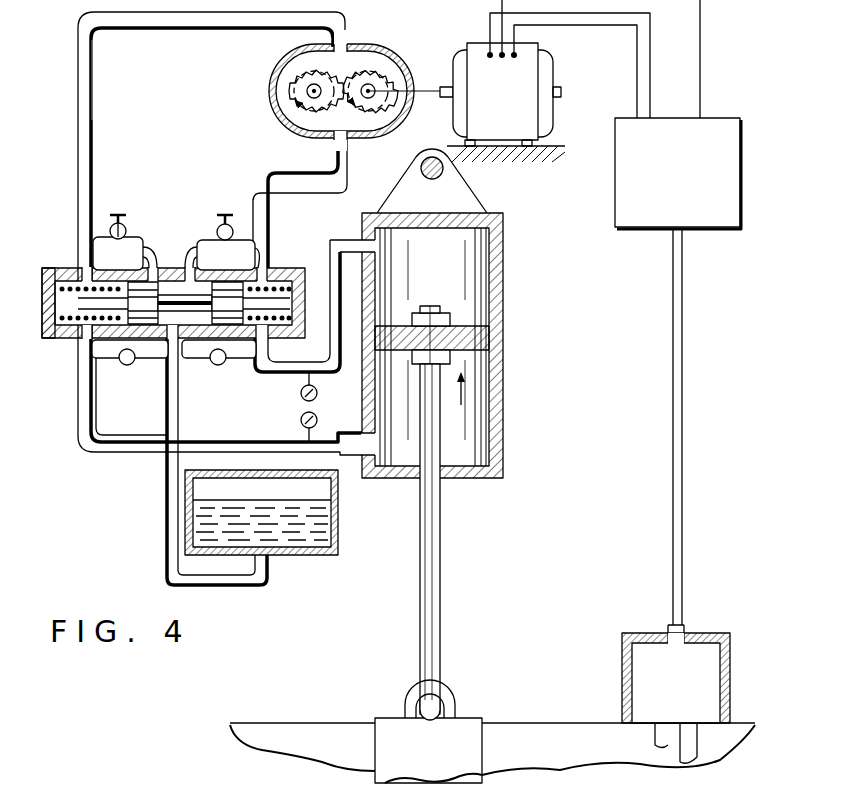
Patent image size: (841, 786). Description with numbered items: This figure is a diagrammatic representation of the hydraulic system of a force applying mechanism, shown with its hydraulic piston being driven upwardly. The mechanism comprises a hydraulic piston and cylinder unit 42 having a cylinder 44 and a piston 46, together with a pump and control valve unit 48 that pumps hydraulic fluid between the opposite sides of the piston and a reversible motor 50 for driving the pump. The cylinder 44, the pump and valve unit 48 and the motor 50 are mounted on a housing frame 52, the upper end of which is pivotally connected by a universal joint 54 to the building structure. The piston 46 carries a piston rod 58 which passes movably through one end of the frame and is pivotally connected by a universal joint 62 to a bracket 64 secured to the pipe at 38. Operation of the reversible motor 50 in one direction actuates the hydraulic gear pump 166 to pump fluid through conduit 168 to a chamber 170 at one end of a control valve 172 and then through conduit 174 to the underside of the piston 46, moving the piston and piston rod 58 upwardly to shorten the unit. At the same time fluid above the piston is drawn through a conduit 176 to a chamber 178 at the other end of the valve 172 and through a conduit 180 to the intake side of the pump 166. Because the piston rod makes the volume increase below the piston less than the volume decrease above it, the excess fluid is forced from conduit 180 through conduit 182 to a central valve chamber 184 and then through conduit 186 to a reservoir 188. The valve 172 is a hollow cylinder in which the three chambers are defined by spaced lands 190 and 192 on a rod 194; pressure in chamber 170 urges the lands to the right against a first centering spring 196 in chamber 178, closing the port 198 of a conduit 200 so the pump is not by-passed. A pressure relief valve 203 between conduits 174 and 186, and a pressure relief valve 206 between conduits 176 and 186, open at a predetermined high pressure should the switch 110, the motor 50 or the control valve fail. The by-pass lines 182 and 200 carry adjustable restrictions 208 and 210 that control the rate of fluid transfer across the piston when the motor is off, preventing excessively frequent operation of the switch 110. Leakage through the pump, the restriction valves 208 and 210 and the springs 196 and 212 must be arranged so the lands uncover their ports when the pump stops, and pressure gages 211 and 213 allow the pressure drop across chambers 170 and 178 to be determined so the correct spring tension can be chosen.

The pipe connection point 38 is at (400, 765).
The hydraulic piston and cylinder unit 42 is at (512, 347).
The cylinder 44 is at (492, 268).
The piston 46 is at (468, 333).
The pump and control valve unit 48 is at (170, 212).
The reversible motor 50 is at (548, 73).
The housing frame 52 is at (527, 152).
The universal joint 54 is at (421, 165).
The piston rod 58 is at (442, 532).
The universal joint 62 is at (449, 672).
The bracket 64 is at (467, 718).
The switch 110 is at (637, 229).
The hydraulic gear pump 166 is at (360, 48).
The conduit 168 is at (226, 30).
The chamber 170 is at (60, 301).
The control valve 172 is at (150, 334).
The conduit 174 is at (78, 405).
The conduit 176 is at (345, 246).
The chamber 178 is at (300, 316).
The conduit 180 is at (297, 196).
The conduit 182 is at (247, 232).
The central valve chamber 184 is at (195, 322).
The conduit 186 is at (185, 497).
The reservoir 188 is at (338, 533).
The land 190 is at (118, 253).
The land 192 is at (220, 255).
The rod 194 is at (180, 292).
The first centering spring 196 is at (291, 270).
The port 198 is at (154, 246).
The conduit 200 is at (136, 236).
The pressure relief valve 203 is at (127, 366).
The pressure relief valve 206 is at (220, 366).
The adjustable restriction 208 is at (212, 213).
The adjustable restriction 210 is at (103, 212).
The pressure gage 211 is at (318, 393).
The spring 212 is at (67, 274).
The pressure gage 213 is at (318, 420).